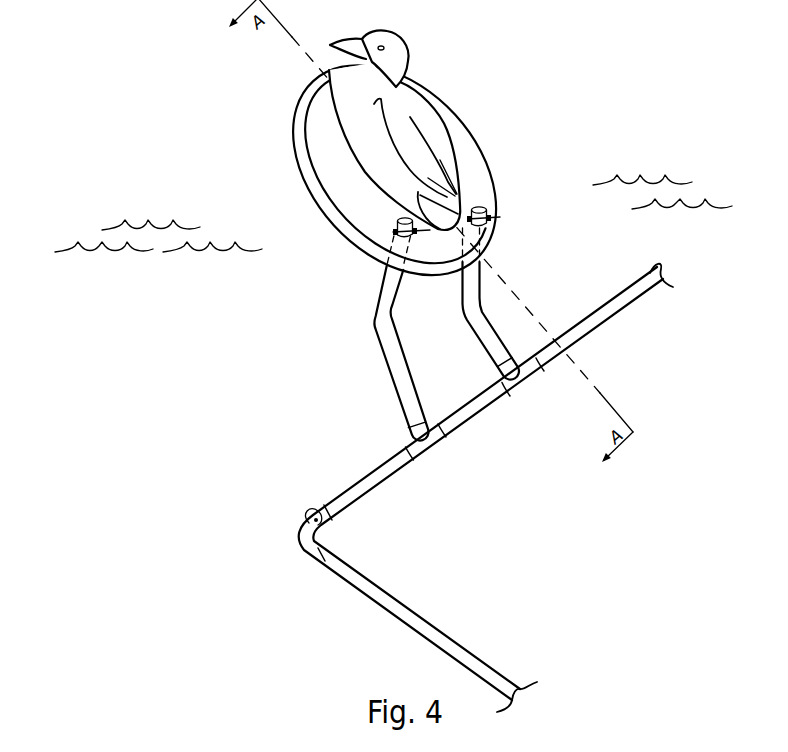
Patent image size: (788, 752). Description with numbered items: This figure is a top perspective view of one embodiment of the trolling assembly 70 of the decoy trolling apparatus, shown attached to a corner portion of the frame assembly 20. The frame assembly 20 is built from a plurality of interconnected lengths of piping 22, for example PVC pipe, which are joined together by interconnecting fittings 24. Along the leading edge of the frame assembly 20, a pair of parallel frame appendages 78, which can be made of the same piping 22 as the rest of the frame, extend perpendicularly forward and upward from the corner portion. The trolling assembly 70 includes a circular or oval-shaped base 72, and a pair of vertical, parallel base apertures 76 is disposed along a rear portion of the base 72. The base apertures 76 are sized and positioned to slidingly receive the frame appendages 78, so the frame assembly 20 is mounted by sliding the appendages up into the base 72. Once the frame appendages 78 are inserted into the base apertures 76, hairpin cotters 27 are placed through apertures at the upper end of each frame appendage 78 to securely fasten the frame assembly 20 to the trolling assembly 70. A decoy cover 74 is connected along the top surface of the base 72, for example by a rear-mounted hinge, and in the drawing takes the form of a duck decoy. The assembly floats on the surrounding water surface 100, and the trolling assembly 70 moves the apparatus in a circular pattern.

The frame assembly 20 is at (498, 488).
The piping 22 is at (353, 577).
The interconnecting fittings 24 is at (497, 385).
The hairpin cotters 27 is at (402, 231).
The trolling assembly 70 is at (440, 163).
The base 72 is at (321, 216).
The decoy cover 74 is at (360, 133).
The base apertures 76 is at (398, 238).
The frame appendages 78 is at (400, 222).
The water surface 100 is at (115, 242).